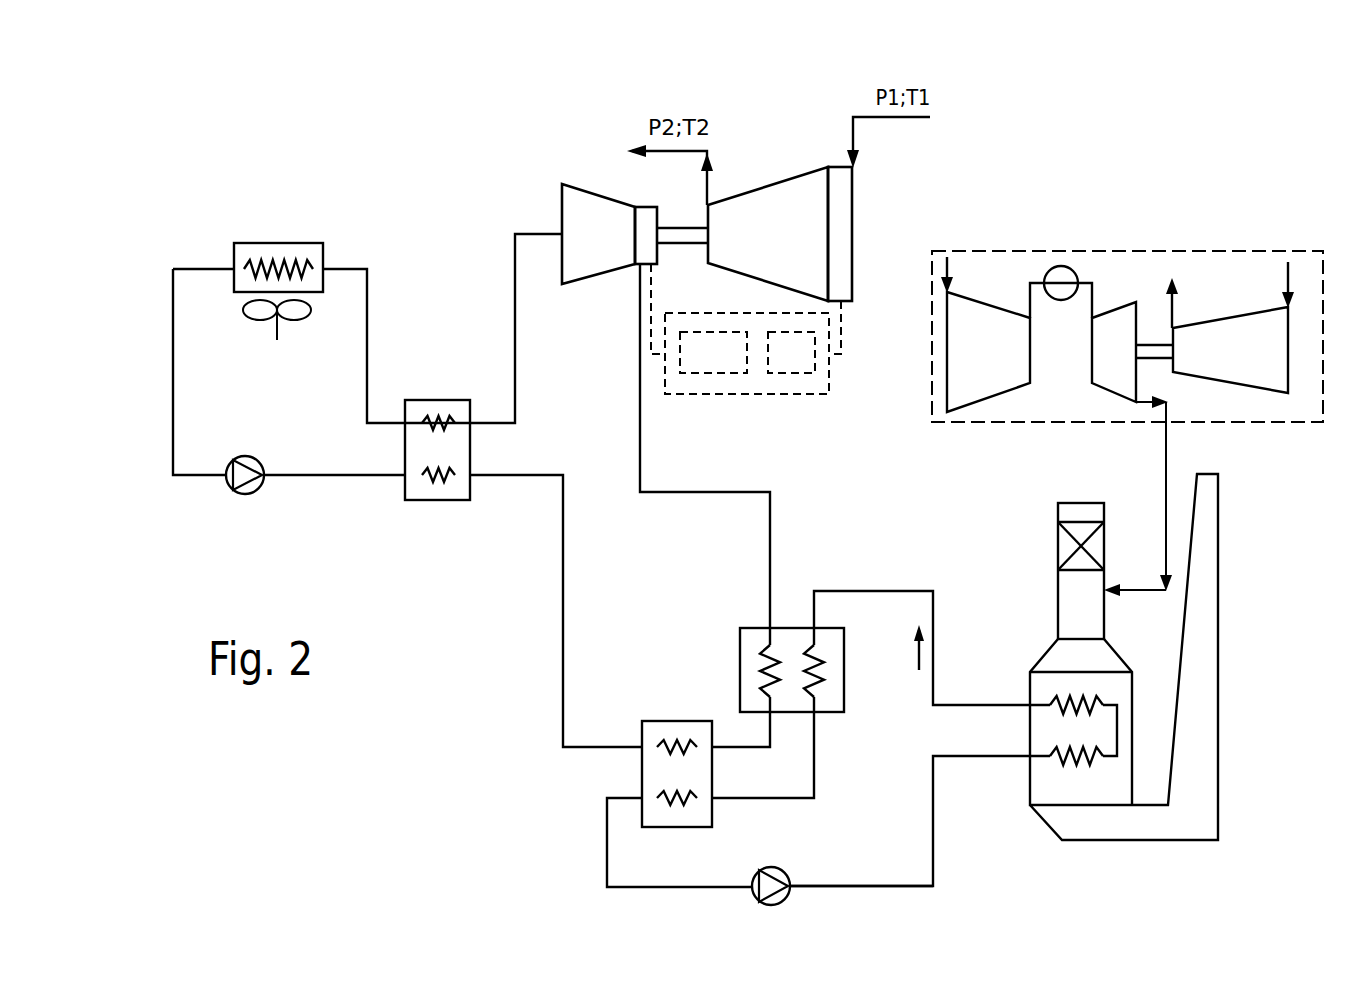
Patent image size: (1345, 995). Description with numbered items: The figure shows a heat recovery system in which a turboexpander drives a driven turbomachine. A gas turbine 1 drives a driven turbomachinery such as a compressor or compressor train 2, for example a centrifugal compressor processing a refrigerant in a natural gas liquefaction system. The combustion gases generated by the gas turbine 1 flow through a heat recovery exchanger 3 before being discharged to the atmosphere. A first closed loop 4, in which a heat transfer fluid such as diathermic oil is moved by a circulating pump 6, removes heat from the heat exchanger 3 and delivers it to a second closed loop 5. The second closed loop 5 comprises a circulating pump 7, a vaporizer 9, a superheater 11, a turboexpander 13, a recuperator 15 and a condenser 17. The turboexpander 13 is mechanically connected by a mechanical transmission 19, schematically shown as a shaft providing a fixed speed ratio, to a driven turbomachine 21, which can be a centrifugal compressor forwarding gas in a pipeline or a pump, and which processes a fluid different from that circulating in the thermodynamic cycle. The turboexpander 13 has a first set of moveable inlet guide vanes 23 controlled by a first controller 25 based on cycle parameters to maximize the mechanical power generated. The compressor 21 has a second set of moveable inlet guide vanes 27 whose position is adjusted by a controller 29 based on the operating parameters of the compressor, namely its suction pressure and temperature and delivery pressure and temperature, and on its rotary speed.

The gas turbine 1 is at (1124, 279).
The compressor 2 is at (1247, 278).
The heat recovery exchanger 3 is at (1018, 812).
The first closed loop 4 is at (838, 895).
The second closed loop 5 is at (540, 570).
The circulating pump 6 is at (758, 897).
The circulating pump 7 is at (257, 490).
The vaporizer 9 is at (684, 713).
The superheater 11 is at (740, 648).
The turboexpander 13 is at (607, 282).
The recuperator 15 is at (413, 510).
The condenser 17 is at (308, 243).
The mechanical transmission 19 is at (695, 232).
The driven turbomachine 21 is at (782, 203).
The first set of moveable inlet guide vanes 23 is at (648, 208).
The first controller 25 is at (710, 362).
The second set of moveable inlet guide vanes 27 is at (843, 262).
The controller 29 is at (793, 357).